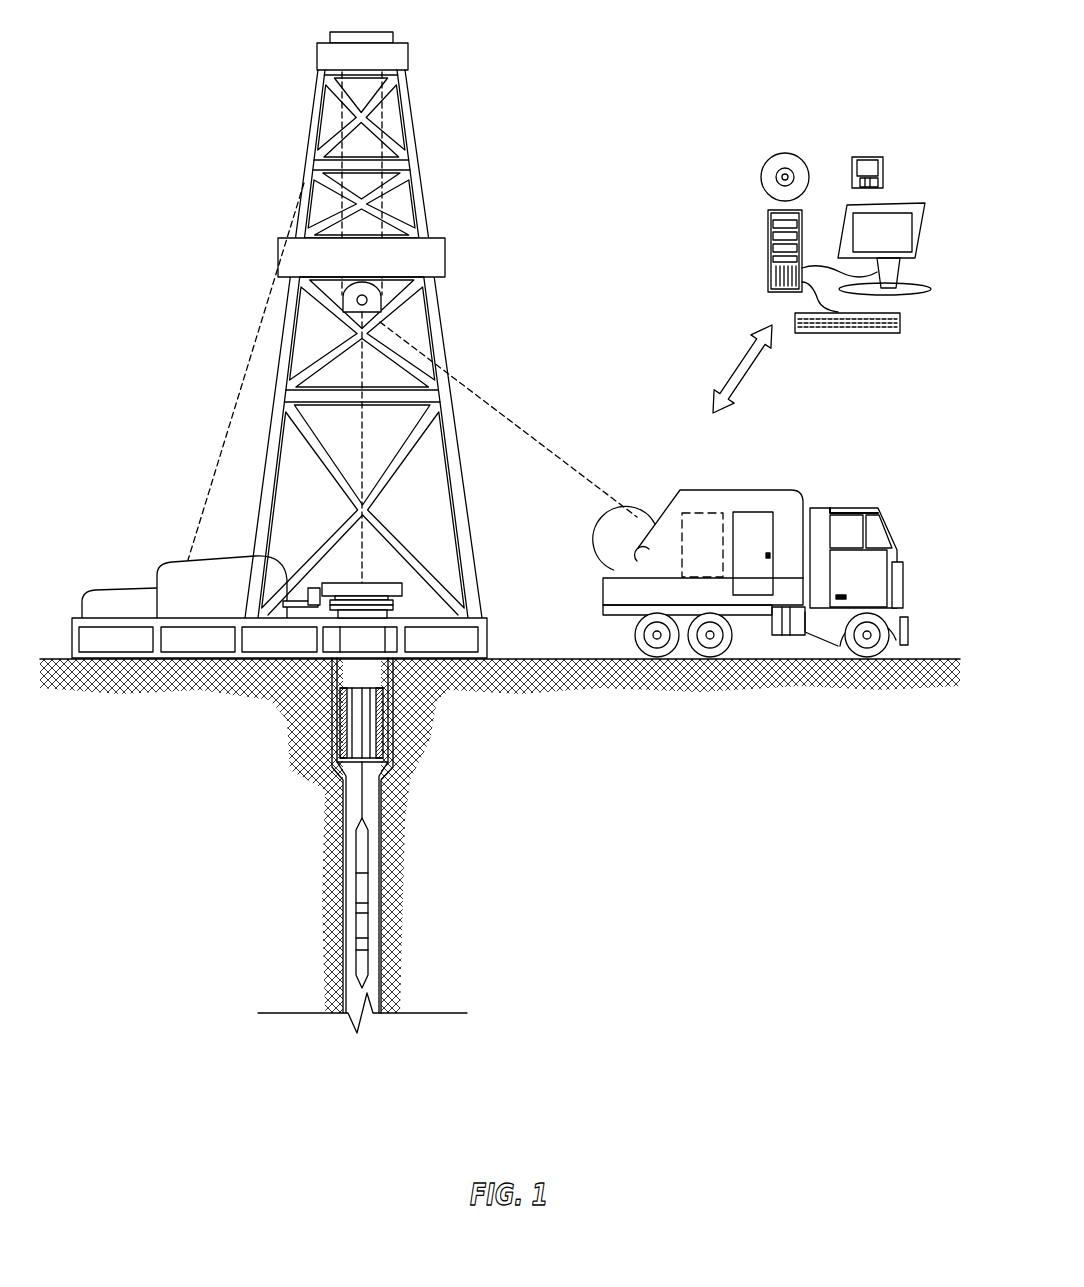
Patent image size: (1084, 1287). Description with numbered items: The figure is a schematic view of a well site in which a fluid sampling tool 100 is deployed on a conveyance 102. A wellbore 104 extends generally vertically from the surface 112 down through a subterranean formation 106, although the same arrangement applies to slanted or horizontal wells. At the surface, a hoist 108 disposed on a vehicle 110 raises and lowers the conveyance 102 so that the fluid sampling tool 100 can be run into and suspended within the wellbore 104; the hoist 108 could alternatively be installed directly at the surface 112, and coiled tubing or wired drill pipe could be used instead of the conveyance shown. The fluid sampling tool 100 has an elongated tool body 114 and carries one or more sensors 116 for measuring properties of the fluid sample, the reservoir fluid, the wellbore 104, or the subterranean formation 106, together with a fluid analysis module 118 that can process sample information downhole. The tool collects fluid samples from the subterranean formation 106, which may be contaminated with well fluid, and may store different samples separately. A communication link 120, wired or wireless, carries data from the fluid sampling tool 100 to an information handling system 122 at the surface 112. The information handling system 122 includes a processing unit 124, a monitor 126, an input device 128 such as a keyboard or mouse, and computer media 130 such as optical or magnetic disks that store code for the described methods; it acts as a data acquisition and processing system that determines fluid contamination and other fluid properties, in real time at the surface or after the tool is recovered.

The fluid sampling tool 100 is at (367, 903).
The conveyance 102 is at (362, 785).
The wellbore 104 is at (343, 840).
The subterranean formation 106 is at (563, 848).
The hoist 108 is at (612, 543).
The vehicle 110 is at (722, 549).
The surface 112 is at (916, 658).
The tool body 114 is at (356, 926).
The sensors 116 is at (368, 942).
The fluid analysis module 118 is at (356, 905).
The communication link 120 is at (752, 372).
The information handling system 122 is at (781, 253).
The processing unit 124 is at (768, 222).
The monitor 126 is at (900, 203).
The input device 128 is at (888, 336).
The computer media 130 is at (868, 155).